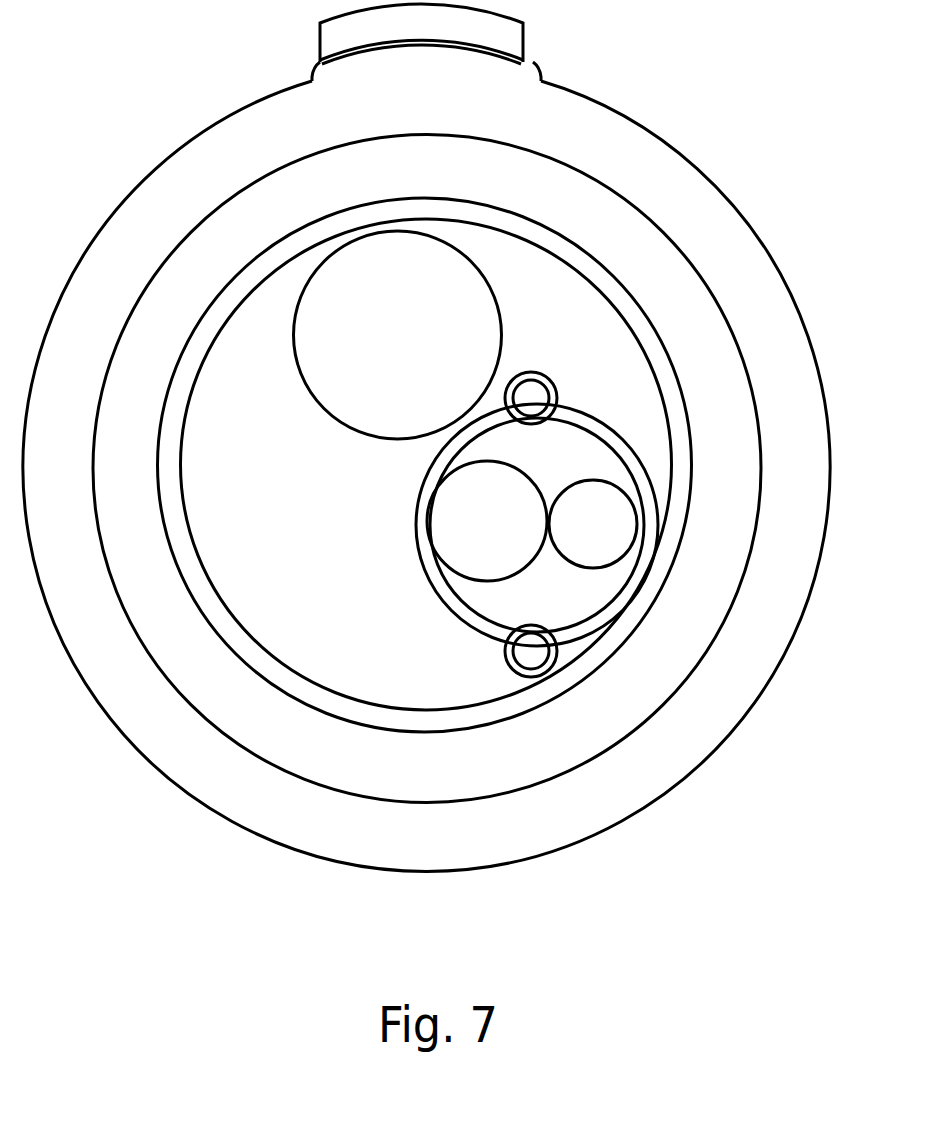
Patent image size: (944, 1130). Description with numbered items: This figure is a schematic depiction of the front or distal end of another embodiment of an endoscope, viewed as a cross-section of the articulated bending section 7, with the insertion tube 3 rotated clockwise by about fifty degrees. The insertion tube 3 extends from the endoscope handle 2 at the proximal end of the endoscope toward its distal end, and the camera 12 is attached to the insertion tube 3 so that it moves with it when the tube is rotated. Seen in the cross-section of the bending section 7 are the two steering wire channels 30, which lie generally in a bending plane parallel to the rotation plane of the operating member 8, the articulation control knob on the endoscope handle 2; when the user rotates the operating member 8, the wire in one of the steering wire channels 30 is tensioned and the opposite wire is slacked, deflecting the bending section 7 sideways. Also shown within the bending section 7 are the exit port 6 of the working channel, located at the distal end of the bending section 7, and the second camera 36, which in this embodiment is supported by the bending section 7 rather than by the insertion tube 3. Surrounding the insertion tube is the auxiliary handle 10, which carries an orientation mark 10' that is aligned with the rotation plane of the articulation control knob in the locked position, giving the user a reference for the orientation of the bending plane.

The endoscope handle 2 is at (198, 810).
The insertion tube 3 is at (205, 636).
The exit port 6 is at (593, 524).
The articulated bending section 7 is at (402, 550).
The operating member 8 is at (322, 42).
The auxiliary handle 10 is at (418, 489).
The orientation mark 10' is at (505, 467).
The camera 12 is at (343, 424).
The steering wire channels 30 is at (535, 393).
The second camera 36 is at (487, 521).